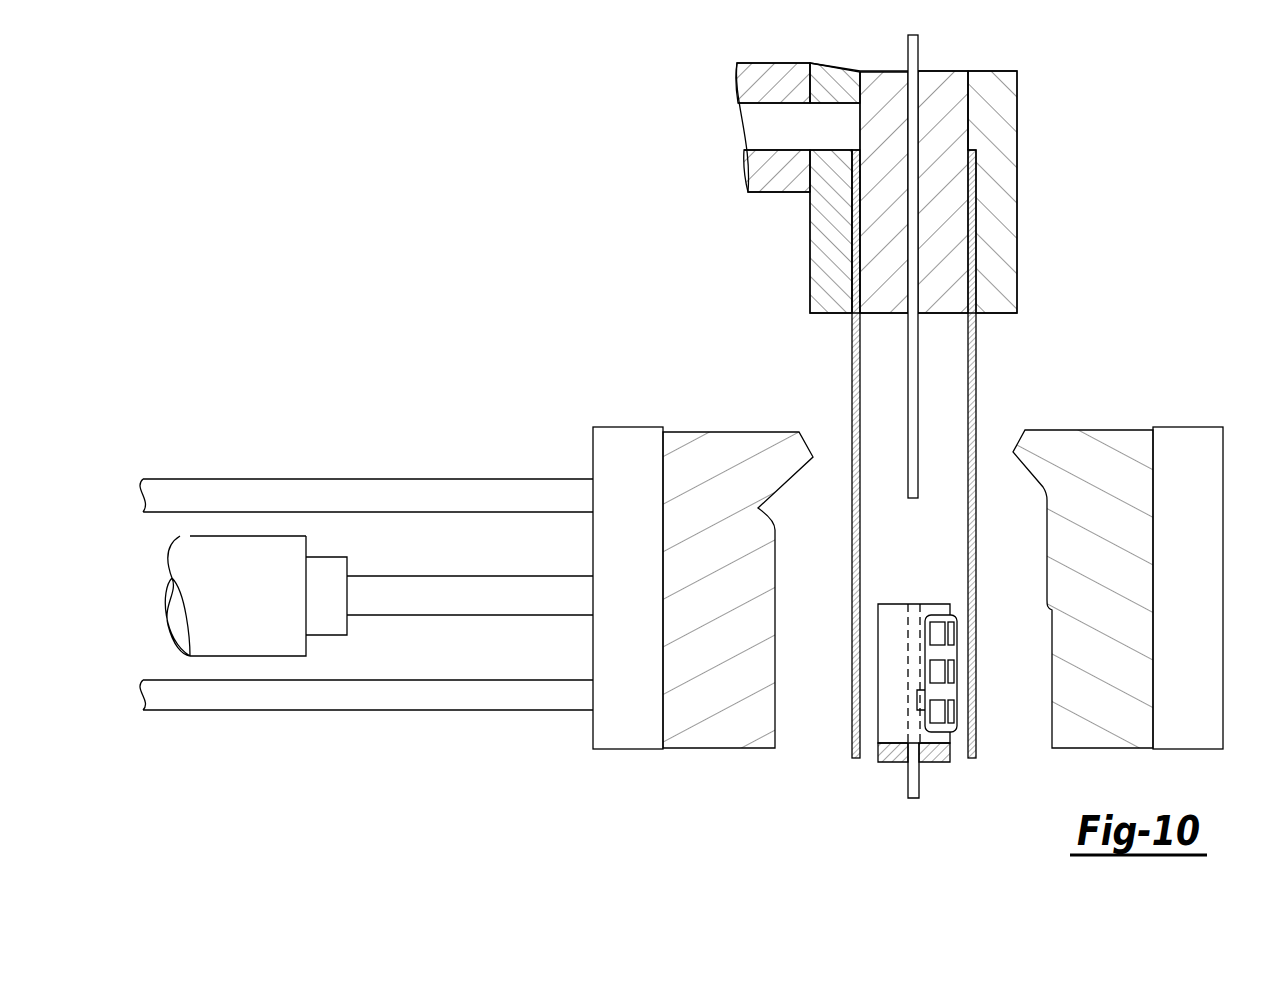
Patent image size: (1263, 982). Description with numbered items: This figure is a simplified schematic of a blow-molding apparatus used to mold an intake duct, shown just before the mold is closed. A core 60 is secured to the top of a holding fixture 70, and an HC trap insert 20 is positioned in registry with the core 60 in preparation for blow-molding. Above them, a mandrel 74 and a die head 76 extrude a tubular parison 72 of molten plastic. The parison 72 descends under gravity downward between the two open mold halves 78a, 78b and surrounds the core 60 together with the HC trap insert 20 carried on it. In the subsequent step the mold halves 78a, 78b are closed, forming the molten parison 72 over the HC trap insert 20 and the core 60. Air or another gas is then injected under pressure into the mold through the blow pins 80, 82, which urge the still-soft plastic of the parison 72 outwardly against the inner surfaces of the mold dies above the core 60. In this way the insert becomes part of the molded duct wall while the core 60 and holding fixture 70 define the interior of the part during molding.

The HC trap insert 20 is at (960, 621).
The core 60 is at (893, 615).
The holding fixture 70 is at (940, 762).
The parison 72 is at (976, 355).
The mandrel 74 is at (952, 75).
The die head 76 is at (1008, 142).
The mold half 78a is at (725, 430).
The mold half 78b is at (1092, 430).
The blow pin 80 is at (913, 787).
The blow pin 82 is at (920, 463).